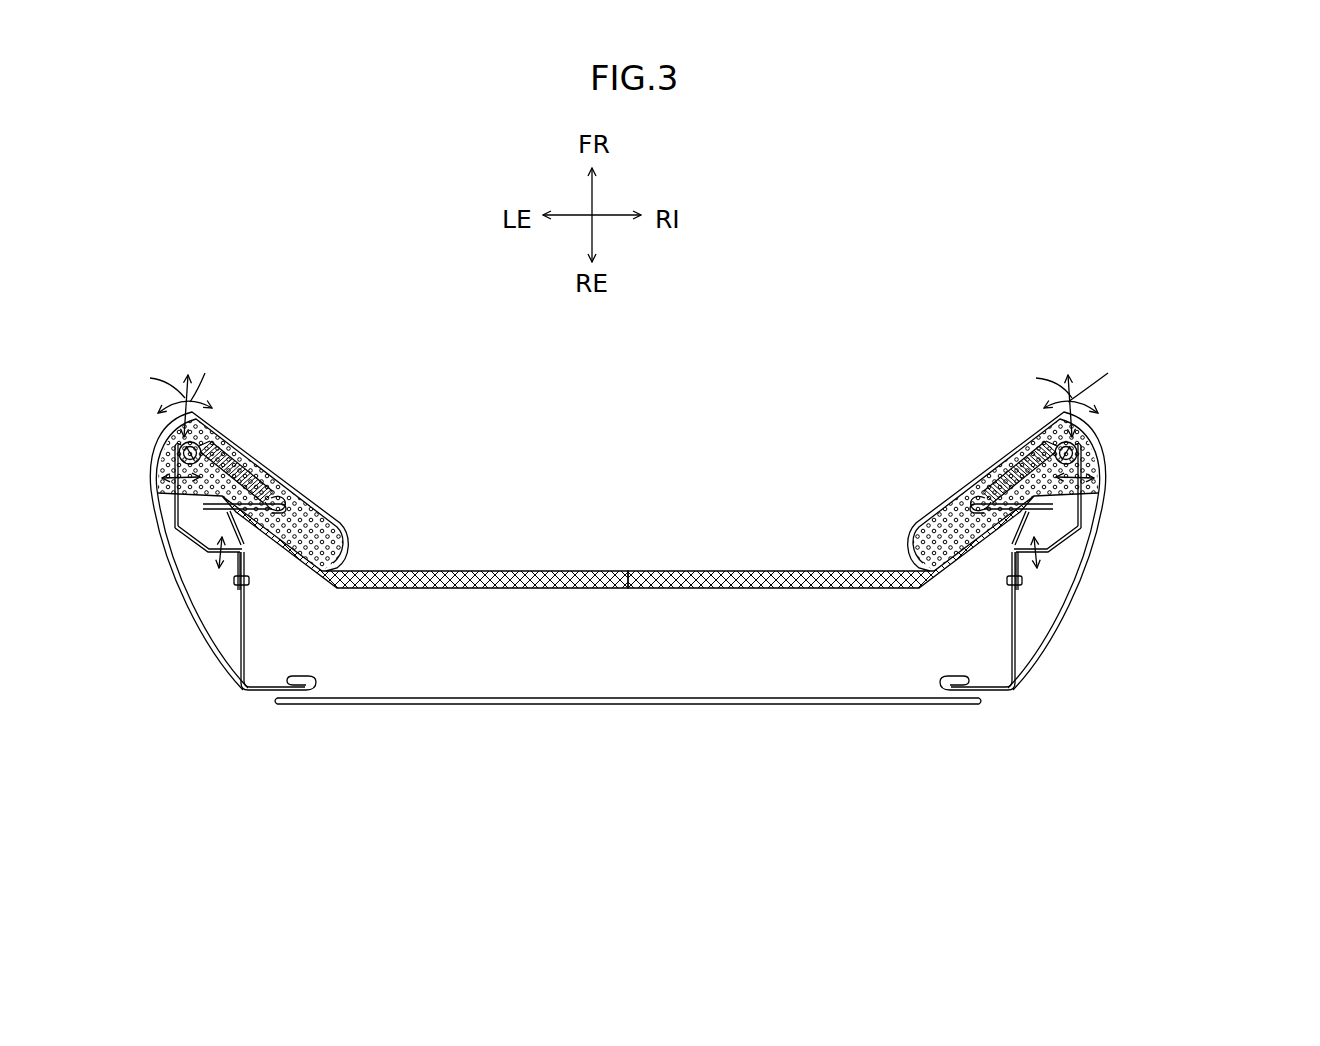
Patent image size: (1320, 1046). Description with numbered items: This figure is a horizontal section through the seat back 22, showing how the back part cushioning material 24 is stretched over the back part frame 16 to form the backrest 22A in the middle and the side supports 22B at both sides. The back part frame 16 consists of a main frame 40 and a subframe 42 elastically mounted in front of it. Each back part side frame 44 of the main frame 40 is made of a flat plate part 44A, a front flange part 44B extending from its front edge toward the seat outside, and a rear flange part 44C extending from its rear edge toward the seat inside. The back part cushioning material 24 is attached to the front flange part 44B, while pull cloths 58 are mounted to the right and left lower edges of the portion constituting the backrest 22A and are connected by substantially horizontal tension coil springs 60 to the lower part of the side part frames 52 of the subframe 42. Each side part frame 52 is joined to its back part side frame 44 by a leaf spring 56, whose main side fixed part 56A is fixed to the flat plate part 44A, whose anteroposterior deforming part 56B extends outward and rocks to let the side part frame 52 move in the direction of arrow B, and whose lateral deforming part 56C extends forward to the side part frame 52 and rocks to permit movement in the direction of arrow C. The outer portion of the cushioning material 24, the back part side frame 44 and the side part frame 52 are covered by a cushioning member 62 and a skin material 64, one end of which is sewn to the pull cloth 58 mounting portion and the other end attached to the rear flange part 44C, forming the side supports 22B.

The back part frame 16 is at (670, 597).
The seat back 22 is at (606, 394).
The backrest 22A is at (767, 556).
The side supports 22B is at (343, 492).
The back part cushioning material 24 is at (604, 698).
The main frame 40 is at (734, 628).
The subframe 42 is at (644, 535).
The back part side frames 44 is at (235, 630).
The flat plate part 44A is at (240, 654).
The front flange part 44B is at (210, 513).
The rear flange part 44C is at (266, 688).
The side part frames 52 is at (1075, 476).
The leaf spring 56 is at (80, 505).
The main side fixed part 56A is at (232, 582).
The anteroposterior deforming part 56B is at (190, 545).
The lateral deforming part 56C is at (172, 505).
The pull cloths 58 is at (318, 532).
The tension coil springs 60 is at (214, 458).
The cushioning member 62 is at (252, 456).
The skin material 64 is at (287, 466).